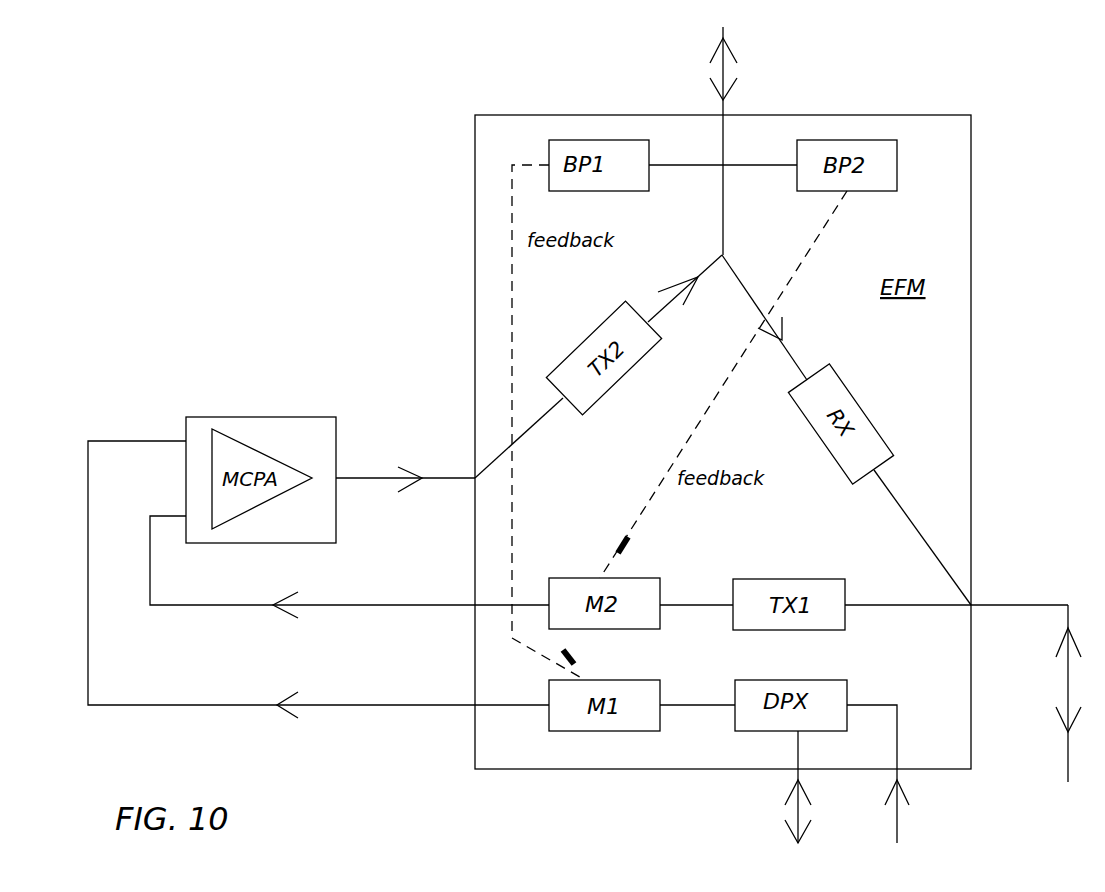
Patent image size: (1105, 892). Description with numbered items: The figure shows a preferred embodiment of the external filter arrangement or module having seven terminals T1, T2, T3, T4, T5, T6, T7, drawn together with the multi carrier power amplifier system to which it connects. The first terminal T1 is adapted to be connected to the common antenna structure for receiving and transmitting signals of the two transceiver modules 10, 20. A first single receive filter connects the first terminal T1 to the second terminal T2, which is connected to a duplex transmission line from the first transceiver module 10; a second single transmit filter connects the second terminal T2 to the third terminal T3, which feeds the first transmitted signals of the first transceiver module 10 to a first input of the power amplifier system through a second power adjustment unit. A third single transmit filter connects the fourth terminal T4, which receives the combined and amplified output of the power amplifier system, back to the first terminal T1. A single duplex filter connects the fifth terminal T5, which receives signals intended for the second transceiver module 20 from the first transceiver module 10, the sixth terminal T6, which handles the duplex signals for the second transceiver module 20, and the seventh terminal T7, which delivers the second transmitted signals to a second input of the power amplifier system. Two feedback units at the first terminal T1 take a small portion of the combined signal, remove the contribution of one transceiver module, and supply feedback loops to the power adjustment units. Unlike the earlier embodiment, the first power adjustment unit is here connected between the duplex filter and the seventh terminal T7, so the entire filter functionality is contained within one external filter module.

The first transceiver module 10 is at (1076, 705).
The second transceiver module 20 is at (779, 811).
The first terminal T1 is at (778, 133).
The second terminal T2 is at (956, 586).
The third terminal T3 is at (349, 567).
The fourth terminal T4 is at (405, 467).
The fifth terminal T5 is at (878, 774).
The sixth terminal T6 is at (780, 755).
The seventh terminal T7 is at (318, 579).